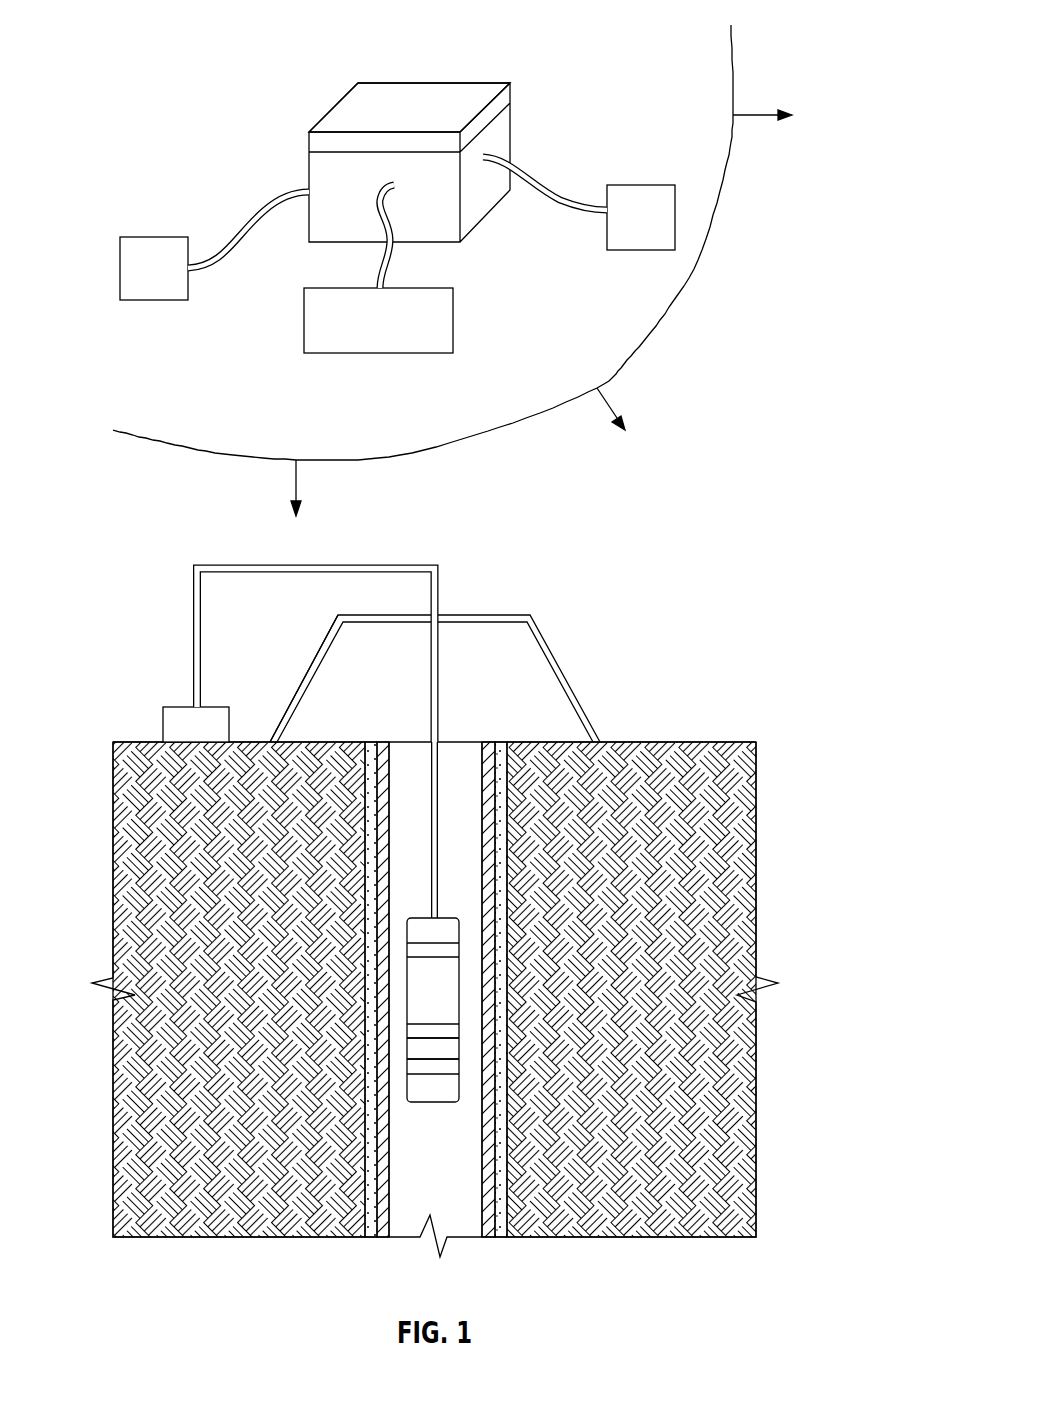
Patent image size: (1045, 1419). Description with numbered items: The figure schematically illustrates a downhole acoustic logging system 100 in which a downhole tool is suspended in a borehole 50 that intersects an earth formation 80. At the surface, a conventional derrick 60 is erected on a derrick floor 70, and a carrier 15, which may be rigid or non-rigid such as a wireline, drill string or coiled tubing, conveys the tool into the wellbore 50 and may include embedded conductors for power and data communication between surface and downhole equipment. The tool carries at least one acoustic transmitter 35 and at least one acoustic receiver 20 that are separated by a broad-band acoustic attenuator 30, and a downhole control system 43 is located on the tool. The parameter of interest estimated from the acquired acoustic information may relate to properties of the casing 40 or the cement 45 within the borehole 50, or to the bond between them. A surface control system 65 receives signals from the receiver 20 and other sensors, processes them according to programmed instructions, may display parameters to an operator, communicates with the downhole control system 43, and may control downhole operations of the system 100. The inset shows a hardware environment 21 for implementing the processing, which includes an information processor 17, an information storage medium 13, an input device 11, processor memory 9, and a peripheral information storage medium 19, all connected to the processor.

The hardware environment 21 is at (136, 38).
The information processor 17 is at (426, 103).
The processor memory 9 is at (505, 127).
The input device 11 is at (640, 185).
The information storage medium 13 is at (340, 288).
The peripheral information storage medium 19 is at (156, 237).
The downhole acoustic logging system 100 is at (628, 606).
The derrick floor 70 is at (338, 665).
The derrick 60 is at (568, 682).
The surface control system 65 is at (163, 725).
The carrier 15 is at (440, 724).
The borehole 50 is at (510, 855).
The earth formation 80 is at (646, 1009).
The downhole control system 43 is at (422, 935).
The acoustic transmitter 35 is at (455, 1030).
The broad-band acoustic attenuator 30 is at (418, 1050).
The acoustic receiver 20 is at (418, 1066).
The casing 40 is at (483, 1145).
The cement 45 is at (498, 1200).